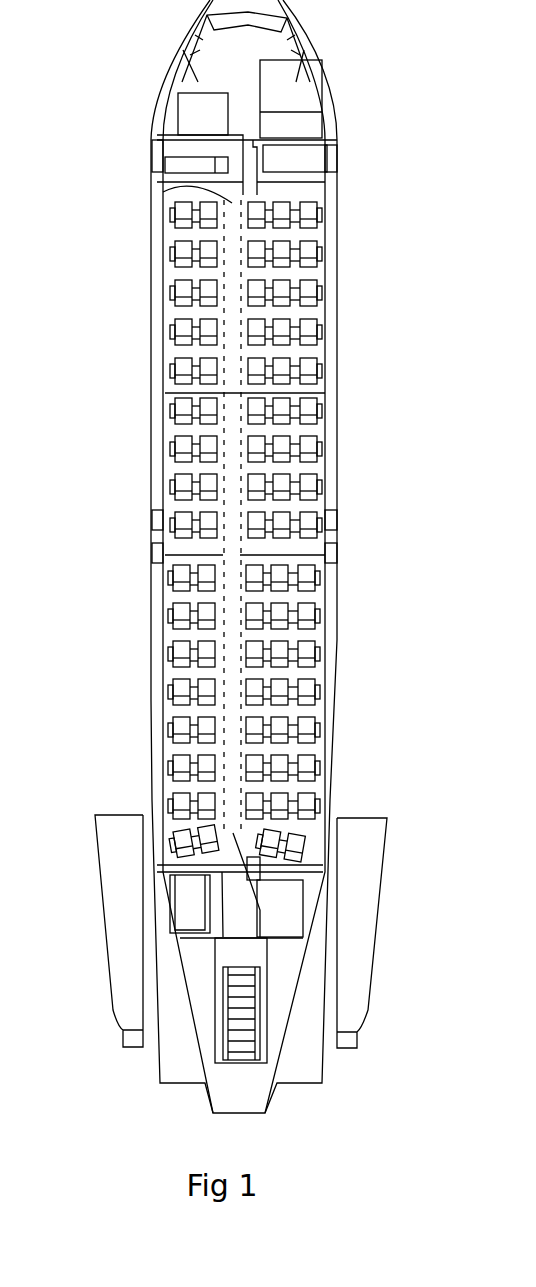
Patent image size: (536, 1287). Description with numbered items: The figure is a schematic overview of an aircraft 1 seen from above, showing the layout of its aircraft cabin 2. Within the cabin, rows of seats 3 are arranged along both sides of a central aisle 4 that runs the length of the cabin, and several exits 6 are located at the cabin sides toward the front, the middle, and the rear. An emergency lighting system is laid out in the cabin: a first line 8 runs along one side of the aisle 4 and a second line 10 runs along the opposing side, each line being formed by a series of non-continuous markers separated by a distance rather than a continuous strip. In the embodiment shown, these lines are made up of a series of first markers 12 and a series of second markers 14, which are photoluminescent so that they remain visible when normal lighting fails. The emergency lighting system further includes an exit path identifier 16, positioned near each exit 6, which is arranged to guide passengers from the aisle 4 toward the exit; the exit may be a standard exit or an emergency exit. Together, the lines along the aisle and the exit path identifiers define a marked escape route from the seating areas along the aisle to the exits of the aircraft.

The aircraft 1 is at (135, 617).
The aircraft cabin 2 is at (172, 332).
The rows of seats 3 is at (170, 255).
The aisle 4 is at (163, 192).
The exits 6 is at (158, 135).
The first line 8 is at (240, 483).
The second line 10 is at (240, 483).
The first markers 12 is at (220, 677).
The second markers 14 is at (240, 692).
The exit path identifier 16 is at (185, 142).